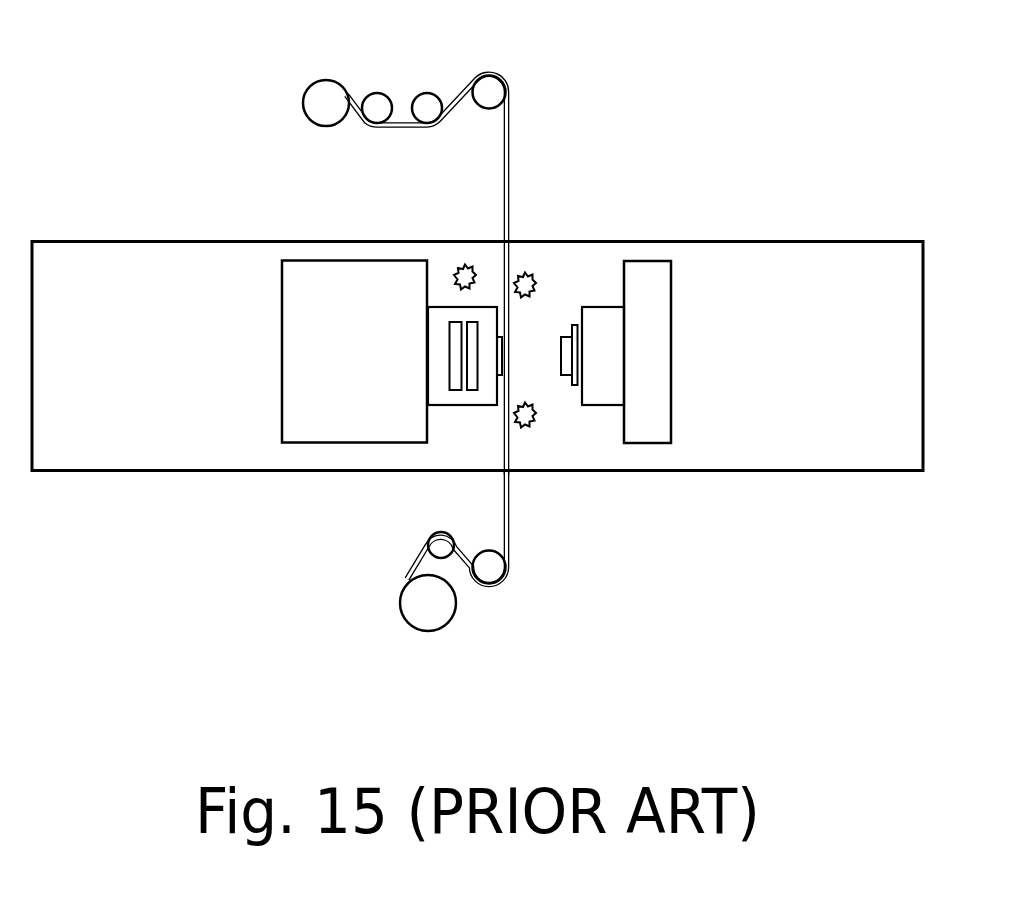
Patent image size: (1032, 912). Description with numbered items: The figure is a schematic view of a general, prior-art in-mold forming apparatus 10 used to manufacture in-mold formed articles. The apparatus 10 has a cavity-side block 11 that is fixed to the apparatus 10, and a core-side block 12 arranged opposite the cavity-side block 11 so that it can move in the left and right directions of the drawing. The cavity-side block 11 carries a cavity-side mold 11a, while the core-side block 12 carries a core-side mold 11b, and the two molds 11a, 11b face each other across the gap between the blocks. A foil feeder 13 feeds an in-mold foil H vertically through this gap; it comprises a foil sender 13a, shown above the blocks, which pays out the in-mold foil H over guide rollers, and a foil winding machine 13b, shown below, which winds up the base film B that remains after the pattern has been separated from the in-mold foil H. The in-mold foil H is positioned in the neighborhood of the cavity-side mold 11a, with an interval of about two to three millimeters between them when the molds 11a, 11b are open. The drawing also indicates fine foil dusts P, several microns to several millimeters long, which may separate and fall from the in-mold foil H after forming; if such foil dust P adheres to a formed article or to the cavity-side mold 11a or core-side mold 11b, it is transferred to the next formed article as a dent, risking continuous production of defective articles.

The in-mold forming apparatus 10 is at (638, 78).
The cavity-side block 11 is at (287, 300).
The cavity-side mold 11a is at (498, 378).
The core-side mold 11b is at (607, 363).
The core-side block 12 is at (672, 297).
The foil feeder 13 is at (497, 74).
The foil sender 13a is at (326, 80).
The foil winding machine 13b is at (430, 632).
The in-mold foil H is at (510, 142).
The base film B is at (510, 538).
The foil dust P is at (475, 267).